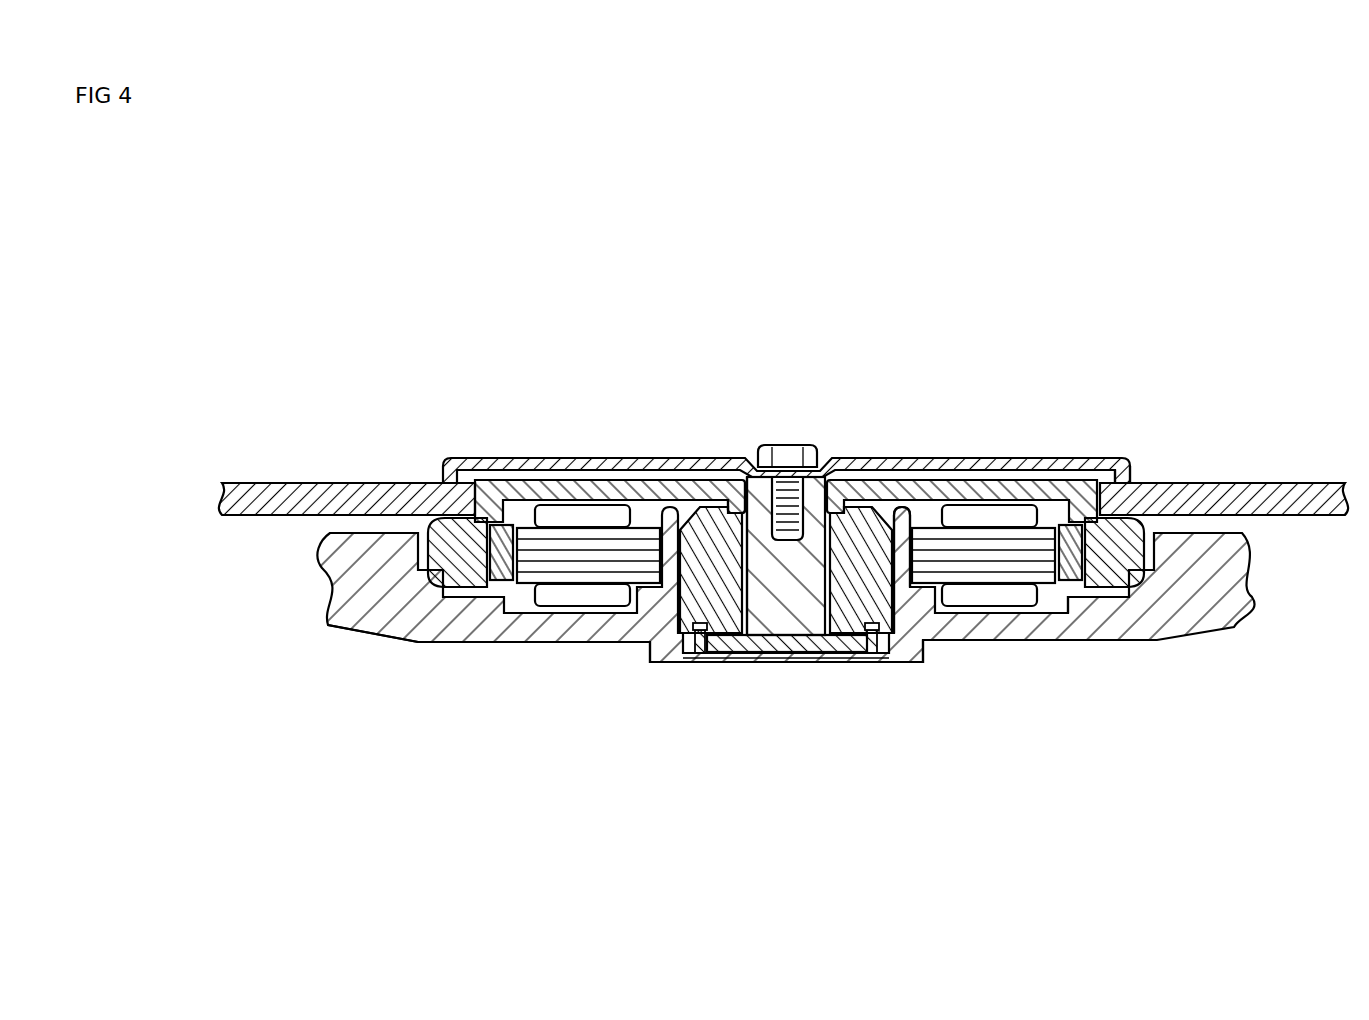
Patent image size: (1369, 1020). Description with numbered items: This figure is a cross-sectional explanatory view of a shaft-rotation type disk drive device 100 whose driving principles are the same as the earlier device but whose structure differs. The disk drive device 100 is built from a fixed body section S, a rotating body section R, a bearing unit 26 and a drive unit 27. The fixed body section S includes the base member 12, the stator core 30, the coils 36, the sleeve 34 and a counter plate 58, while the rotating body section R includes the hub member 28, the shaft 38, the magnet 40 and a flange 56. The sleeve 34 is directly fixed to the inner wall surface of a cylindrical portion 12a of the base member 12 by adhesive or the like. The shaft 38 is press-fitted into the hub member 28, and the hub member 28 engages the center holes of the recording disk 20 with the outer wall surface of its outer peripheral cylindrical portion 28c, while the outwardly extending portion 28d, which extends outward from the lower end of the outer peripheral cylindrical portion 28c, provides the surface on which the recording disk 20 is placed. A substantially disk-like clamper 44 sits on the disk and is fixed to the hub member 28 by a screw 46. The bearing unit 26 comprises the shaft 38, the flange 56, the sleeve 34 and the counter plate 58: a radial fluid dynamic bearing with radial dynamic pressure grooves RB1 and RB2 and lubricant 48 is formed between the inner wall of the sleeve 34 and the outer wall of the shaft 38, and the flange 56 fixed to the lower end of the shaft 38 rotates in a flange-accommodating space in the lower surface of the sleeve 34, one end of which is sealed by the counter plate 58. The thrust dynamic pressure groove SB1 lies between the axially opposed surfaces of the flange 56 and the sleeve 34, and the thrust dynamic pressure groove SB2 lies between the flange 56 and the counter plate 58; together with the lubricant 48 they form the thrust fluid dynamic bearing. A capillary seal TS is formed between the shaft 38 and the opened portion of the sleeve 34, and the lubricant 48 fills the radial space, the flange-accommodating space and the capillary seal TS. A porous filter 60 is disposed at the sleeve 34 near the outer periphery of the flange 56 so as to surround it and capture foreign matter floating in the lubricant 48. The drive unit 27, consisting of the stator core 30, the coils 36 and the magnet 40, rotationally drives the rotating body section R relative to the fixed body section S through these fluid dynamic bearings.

The disk drive device 100 is at (893, 262).
The base member 12 is at (1233, 604).
The cylindrical portion 12a is at (650, 618).
The recording disk 20 is at (1303, 490).
The bearing unit 26 is at (711, 586).
The drive unit 27 is at (600, 512).
The hub member 28 is at (1052, 470).
The outer peripheral cylindrical portion 28c is at (1135, 480).
The outwardly extending portion 28d is at (1120, 568).
The stator core 30 is at (1008, 545).
The sleeve 34 is at (893, 485).
The coils 36 is at (569, 512).
The shaft 38 is at (798, 555).
The magnet 40 is at (1070, 602).
The clamper 44 is at (968, 465).
The screw 46 is at (790, 455).
The lubricant 48 is at (858, 515).
The flange 56 is at (833, 650).
The counter plate 58 is at (893, 628).
The porous filter 60 is at (697, 631).
The rotating body section R is at (500, 450).
The fixed body section S is at (405, 630).
The capillary seal TS is at (727, 505).
The radial dynamic pressure groove RB1 is at (756, 550).
The radial dynamic pressure groove RB2 is at (749, 618).
The thrust dynamic pressure groove SB1 is at (855, 634).
The thrust dynamic pressure groove SB2 is at (798, 648).